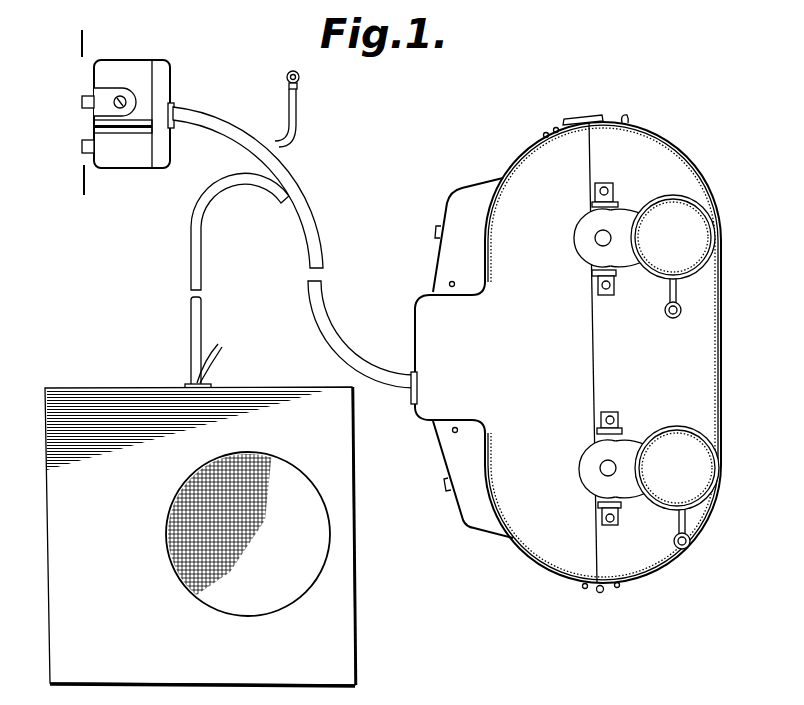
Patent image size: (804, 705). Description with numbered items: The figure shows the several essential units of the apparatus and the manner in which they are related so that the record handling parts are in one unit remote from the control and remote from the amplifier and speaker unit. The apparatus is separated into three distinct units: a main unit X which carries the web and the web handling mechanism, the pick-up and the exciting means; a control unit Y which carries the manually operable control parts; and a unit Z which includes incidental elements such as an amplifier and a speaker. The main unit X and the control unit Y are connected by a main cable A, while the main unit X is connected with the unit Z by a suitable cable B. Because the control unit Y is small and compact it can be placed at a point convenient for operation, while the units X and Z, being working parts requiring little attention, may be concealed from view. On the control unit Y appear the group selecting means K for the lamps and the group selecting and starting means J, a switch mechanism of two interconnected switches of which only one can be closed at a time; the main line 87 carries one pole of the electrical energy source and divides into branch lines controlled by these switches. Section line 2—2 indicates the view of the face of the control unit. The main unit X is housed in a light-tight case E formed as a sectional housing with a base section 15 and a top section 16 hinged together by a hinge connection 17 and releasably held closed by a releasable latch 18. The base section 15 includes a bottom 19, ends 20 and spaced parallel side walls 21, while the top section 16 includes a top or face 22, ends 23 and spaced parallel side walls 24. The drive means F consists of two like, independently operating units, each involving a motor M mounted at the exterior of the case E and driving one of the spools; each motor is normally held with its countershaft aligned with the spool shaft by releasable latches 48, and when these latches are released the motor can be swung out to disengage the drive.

The section line 2— 2 is at (79, 40).
The control unit Y is at (176, 72).
The group selecting means K is at (76, 100).
The group selecting and starting means J is at (78, 153).
The main cable A is at (232, 115).
The cable B is at (186, 319).
The main line 87 is at (292, 121).
The amplifier and speaker unit Z is at (274, 382).
The main unit X is at (697, 152).
The top section 16 is at (521, 172).
The top or face 22 is at (443, 457).
The side walls 24 is at (551, 352).
The side walls 21 is at (666, 360).
The base section 15 is at (697, 392).
The bottom 19 is at (725, 345).
The motor M is at (646, 352).
The releasable latches 48 is at (600, 282).
The drive means F is at (709, 278).
The releasable latch 18 is at (590, 118).
The ends 23 is at (535, 137).
The hinge connection 17 is at (600, 594).
The ends 20 is at (641, 124).
The case E is at (645, 565).